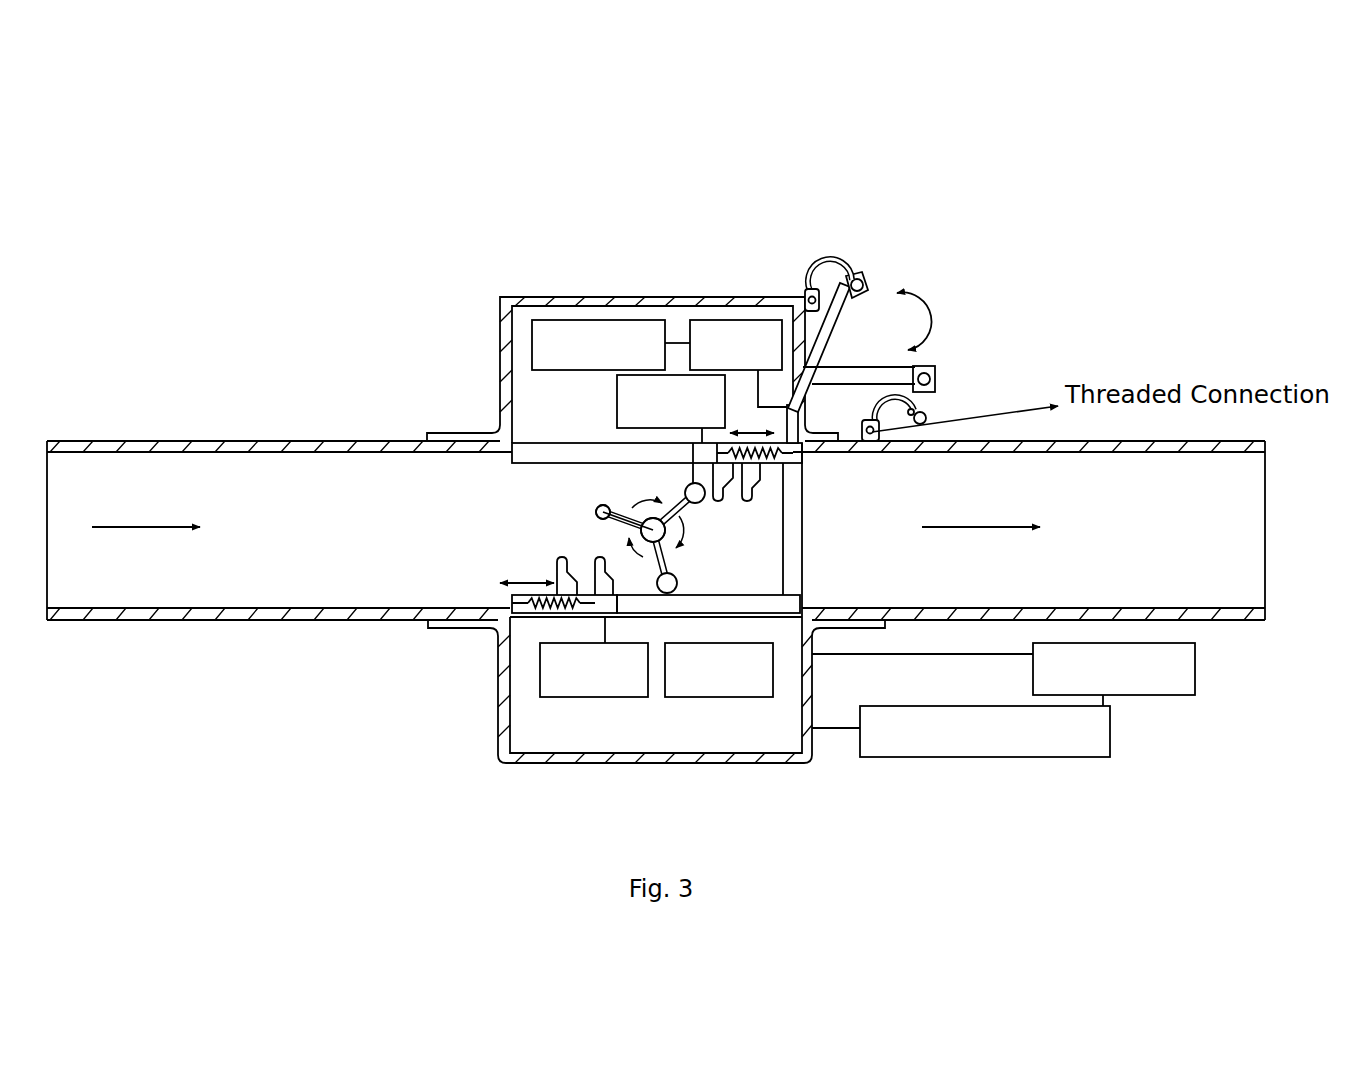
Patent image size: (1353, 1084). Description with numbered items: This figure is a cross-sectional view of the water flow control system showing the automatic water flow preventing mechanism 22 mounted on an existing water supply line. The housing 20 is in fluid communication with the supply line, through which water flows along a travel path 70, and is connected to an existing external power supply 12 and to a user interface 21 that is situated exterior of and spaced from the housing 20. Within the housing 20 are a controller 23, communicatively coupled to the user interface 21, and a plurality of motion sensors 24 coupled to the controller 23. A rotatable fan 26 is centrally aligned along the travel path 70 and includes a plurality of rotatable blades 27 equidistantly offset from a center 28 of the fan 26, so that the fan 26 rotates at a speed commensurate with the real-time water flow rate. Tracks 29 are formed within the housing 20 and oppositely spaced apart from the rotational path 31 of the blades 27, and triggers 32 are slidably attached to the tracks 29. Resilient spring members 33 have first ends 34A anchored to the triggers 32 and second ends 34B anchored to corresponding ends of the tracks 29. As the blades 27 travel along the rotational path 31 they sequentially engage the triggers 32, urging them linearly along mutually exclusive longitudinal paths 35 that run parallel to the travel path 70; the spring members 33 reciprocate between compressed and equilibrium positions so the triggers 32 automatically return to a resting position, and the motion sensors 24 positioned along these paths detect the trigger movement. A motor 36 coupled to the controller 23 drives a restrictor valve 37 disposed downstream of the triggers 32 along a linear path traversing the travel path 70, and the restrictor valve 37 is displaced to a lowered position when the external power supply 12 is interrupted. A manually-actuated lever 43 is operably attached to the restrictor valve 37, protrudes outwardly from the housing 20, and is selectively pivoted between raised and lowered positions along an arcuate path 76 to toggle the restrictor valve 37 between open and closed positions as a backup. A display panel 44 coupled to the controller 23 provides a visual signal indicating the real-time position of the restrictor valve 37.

The existing external power supply 12 is at (1062, 747).
The housing 20 is at (520, 300).
The user interface 21 is at (1160, 685).
The automatic water flow preventing mechanism 22 is at (695, 287).
The controller 23 is at (548, 327).
The motion sensors 24 is at (711, 398).
The rotatable fan 26 is at (594, 515).
The rotatable blades 27 is at (601, 505).
The center of the fan 28 is at (630, 535).
The tracks 29 is at (612, 452).
The rotational path 31 is at (647, 558).
The triggers 32 is at (703, 483).
The resilient spring members 33 is at (548, 603).
The first end 34A is at (587, 582).
The second end 34B is at (500, 618).
The longitudinal paths 35 is at (530, 581).
The motor 36 is at (733, 330).
The restrictor valve 37 is at (858, 288).
The manually-actuated lever 43 is at (840, 322).
The display panel 44 is at (755, 687).
The travel path 70 is at (147, 529).
The arcuate path 76 is at (934, 327).